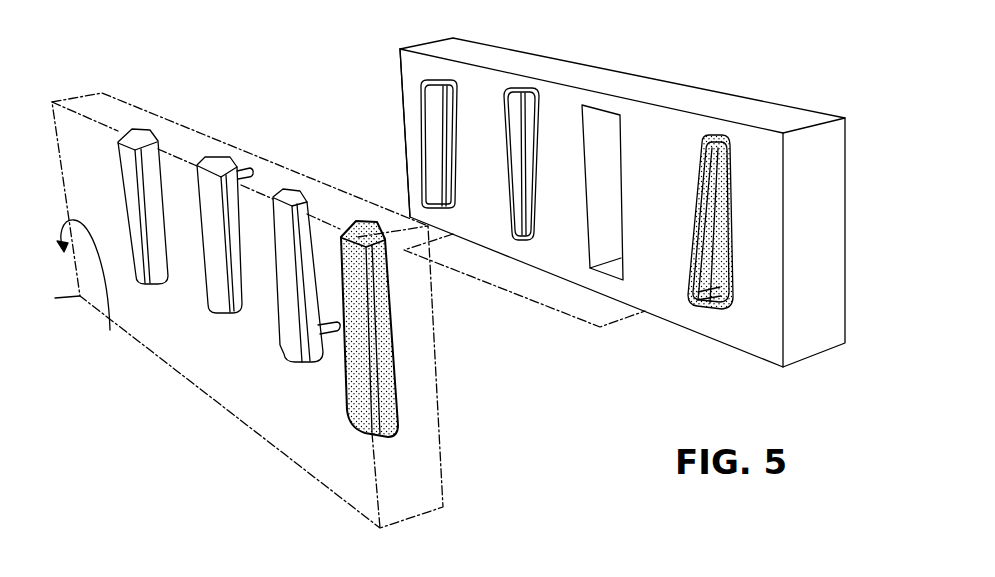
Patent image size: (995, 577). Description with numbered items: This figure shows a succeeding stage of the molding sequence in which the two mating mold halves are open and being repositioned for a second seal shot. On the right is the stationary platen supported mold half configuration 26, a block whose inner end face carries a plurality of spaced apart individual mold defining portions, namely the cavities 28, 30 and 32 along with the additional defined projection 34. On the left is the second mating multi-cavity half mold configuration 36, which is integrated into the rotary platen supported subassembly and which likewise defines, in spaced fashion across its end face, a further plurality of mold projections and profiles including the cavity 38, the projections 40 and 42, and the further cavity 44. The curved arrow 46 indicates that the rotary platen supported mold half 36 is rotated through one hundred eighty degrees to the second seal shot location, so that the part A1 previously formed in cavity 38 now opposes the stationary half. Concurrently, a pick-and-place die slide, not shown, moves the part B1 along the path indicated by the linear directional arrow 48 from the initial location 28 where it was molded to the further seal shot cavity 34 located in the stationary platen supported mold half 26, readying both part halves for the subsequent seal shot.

The mold half configuration 26 is at (793, 347).
The cavity 28 is at (427, 95).
The cavity 30 is at (517, 90).
The cavity 32 is at (600, 104).
The projection 34 is at (713, 134).
The multi-cavity half mold configuration 36 is at (317, 462).
The cavity 38 is at (364, 222).
The projection 40 is at (288, 190).
The projection 42 is at (214, 160).
The cavity 44 is at (145, 131).
The arrow 46 is at (110, 307).
The linear directional arrow 48 is at (580, 318).